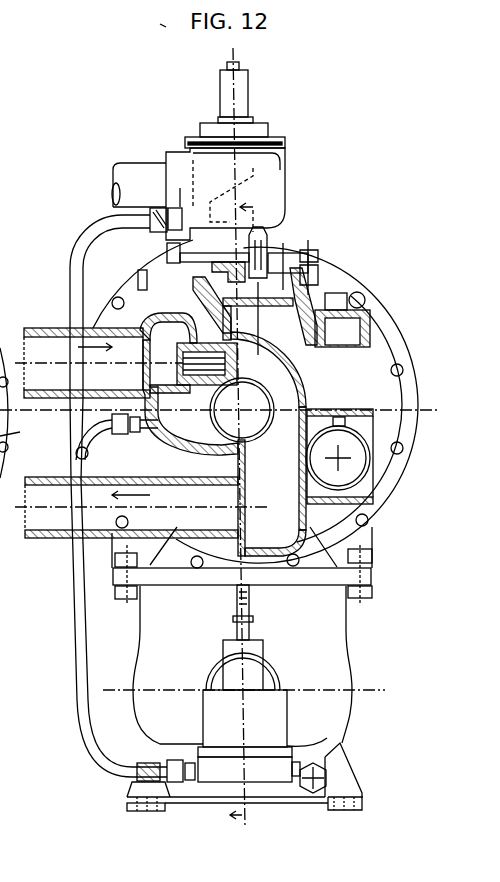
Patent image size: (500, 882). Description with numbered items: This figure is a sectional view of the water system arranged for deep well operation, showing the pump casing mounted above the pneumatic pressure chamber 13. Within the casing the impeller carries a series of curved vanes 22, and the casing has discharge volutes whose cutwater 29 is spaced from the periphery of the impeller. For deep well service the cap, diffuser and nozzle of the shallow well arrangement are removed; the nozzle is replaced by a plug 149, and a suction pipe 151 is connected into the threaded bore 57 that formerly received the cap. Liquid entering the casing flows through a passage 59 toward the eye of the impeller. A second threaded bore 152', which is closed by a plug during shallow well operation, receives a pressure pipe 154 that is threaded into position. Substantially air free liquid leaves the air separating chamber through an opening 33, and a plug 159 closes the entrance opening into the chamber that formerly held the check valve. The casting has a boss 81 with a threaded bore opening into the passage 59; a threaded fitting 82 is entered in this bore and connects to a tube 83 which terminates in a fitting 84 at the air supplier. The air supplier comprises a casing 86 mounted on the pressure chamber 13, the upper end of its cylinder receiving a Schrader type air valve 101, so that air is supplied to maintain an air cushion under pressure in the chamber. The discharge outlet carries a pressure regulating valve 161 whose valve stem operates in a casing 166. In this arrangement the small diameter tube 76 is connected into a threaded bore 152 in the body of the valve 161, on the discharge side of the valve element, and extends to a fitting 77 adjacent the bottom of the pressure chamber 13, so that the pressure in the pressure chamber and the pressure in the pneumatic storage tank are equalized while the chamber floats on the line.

The casing 166 is at (250, 90).
The threaded bore 152 is at (143, 179).
The pressure regulating valve 161 is at (299, 181).
The tube 76 is at (66, 270).
The suction pipe 151 is at (37, 328).
The cutwater 29 is at (9, 327).
The curved vanes 22 is at (22, 433).
The threaded bore 57 is at (144, 341).
The plug 149 is at (183, 368).
The passage 59 is at (230, 361).
The threaded fitting 82 is at (118, 434).
The boss 81 is at (140, 432).
The pressure pipe 154 is at (145, 477).
The threaded bore 152' is at (272, 481).
The plug 159 is at (362, 480).
The opening 33 is at (275, 543).
The tube 83 is at (74, 620).
The Schrader type air valve 101 is at (251, 612).
The pneumatic pressure chamber 13 is at (247, 525).
The casing 86 is at (249, 711).
The fitting 77 is at (175, 783).
The fitting 84 is at (192, 783).